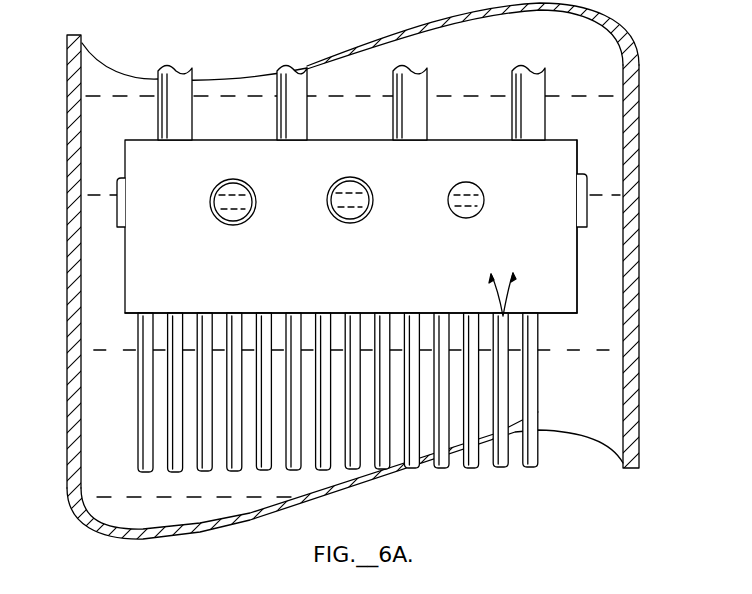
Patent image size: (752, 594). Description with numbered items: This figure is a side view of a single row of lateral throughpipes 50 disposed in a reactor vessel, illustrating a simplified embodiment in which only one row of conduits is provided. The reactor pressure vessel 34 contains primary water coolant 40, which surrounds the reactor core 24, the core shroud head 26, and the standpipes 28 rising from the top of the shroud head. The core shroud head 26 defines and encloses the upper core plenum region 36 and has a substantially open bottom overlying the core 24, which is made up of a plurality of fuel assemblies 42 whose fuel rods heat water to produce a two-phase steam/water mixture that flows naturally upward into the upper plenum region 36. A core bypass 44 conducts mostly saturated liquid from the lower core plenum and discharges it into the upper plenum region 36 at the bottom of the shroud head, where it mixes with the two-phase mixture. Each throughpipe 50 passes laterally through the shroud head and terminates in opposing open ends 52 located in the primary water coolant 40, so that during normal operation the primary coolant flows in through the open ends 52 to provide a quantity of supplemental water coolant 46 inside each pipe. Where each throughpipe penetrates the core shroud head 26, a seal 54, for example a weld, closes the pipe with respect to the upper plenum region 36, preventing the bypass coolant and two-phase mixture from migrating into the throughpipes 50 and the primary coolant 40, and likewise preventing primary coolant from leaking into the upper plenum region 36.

The reactor core 24 is at (538, 412).
The core shroud head 26 is at (580, 302).
The standpipes 28 is at (158, 113).
The reactor pressure vessel 34 is at (640, 294).
The upper core plenum region 36 is at (147, 280).
The primary water coolant 40 is at (90, 381).
The fuel assemblies 42 is at (494, 470).
The core bypass 44 is at (138, 337).
The supplemental water coolant 46 is at (467, 198).
The throughpipes 50 is at (238, 215).
The open ends 52 is at (347, 205).
The seal 54 is at (122, 231).